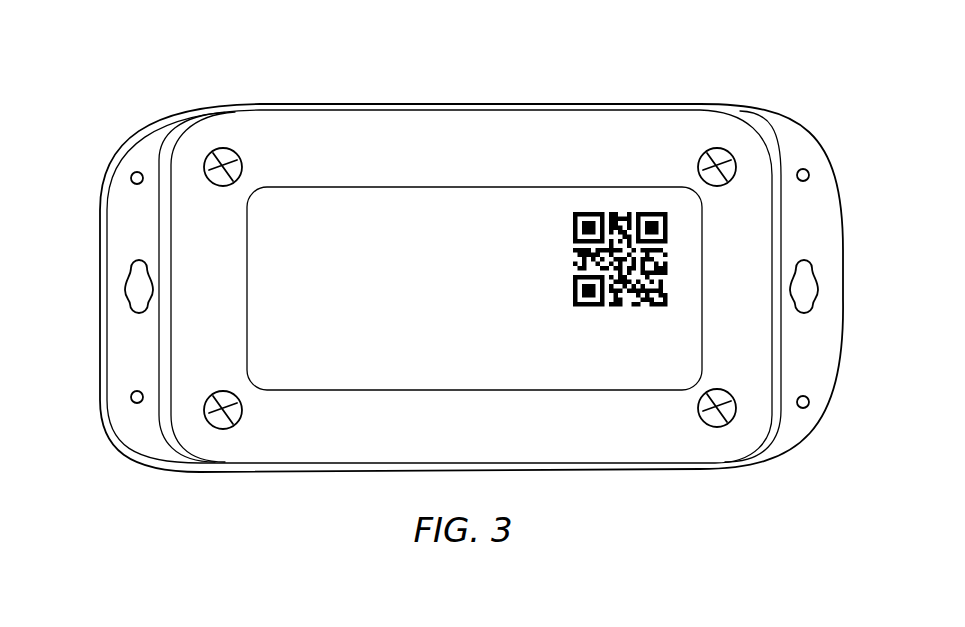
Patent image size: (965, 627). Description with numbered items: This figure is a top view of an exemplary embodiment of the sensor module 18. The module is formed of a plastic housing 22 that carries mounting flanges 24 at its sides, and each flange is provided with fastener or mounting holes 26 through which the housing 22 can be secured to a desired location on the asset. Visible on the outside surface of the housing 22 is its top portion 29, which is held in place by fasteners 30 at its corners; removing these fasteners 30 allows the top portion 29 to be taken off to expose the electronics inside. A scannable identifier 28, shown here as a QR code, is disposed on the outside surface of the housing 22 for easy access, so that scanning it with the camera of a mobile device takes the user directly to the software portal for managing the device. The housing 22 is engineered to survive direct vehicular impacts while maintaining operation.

The sensor module 18 is at (623, 484).
The housing 22 is at (247, 468).
The mounting flanges 24 is at (118, 218).
The mounting holes 26 is at (138, 172).
The scannable identifier 28 is at (624, 212).
The top portion 29 is at (479, 153).
The fasteners 30 is at (240, 160).